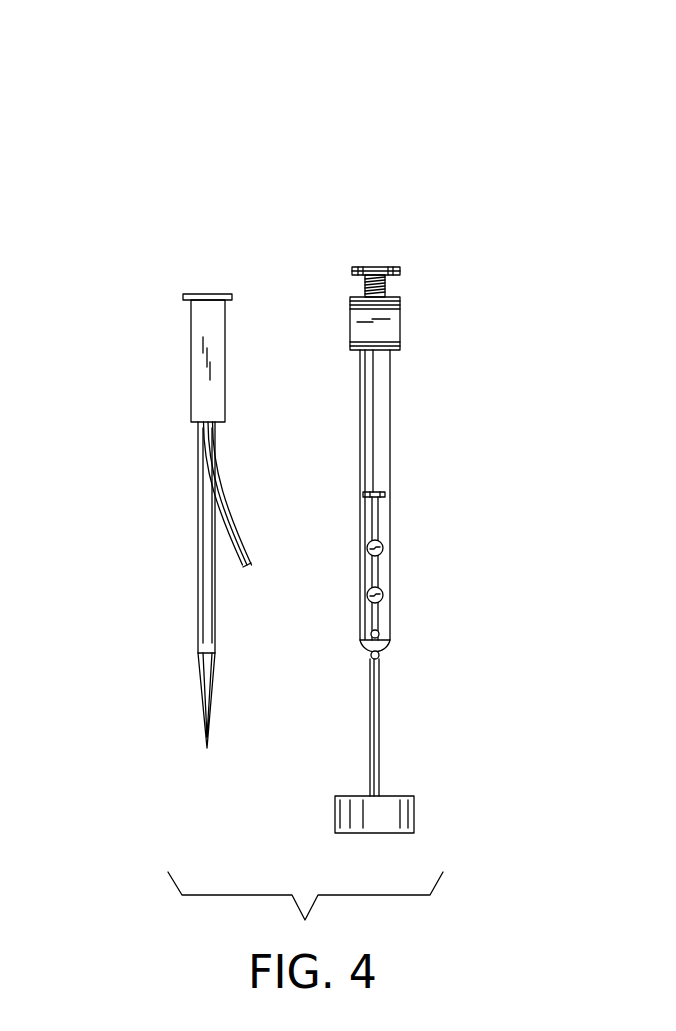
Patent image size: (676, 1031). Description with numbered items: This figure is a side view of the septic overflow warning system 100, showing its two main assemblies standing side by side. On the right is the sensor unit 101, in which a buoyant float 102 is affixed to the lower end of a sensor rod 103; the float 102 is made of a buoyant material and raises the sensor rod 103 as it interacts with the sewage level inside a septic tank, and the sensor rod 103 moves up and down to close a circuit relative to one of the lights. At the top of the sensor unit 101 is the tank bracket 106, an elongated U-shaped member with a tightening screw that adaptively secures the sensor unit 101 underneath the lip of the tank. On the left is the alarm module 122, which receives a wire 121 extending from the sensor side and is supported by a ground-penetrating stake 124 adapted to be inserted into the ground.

The septic overflow warning system 100 is at (101, 92).
The sensor unit 101 is at (427, 242).
The float 102 is at (413, 813).
The sensor rod 103 is at (381, 717).
The tank bracket 106 is at (400, 315).
The wire 121 is at (223, 517).
The alarm module 122 is at (248, 270).
The ground-penetrating stake 124 is at (205, 585).